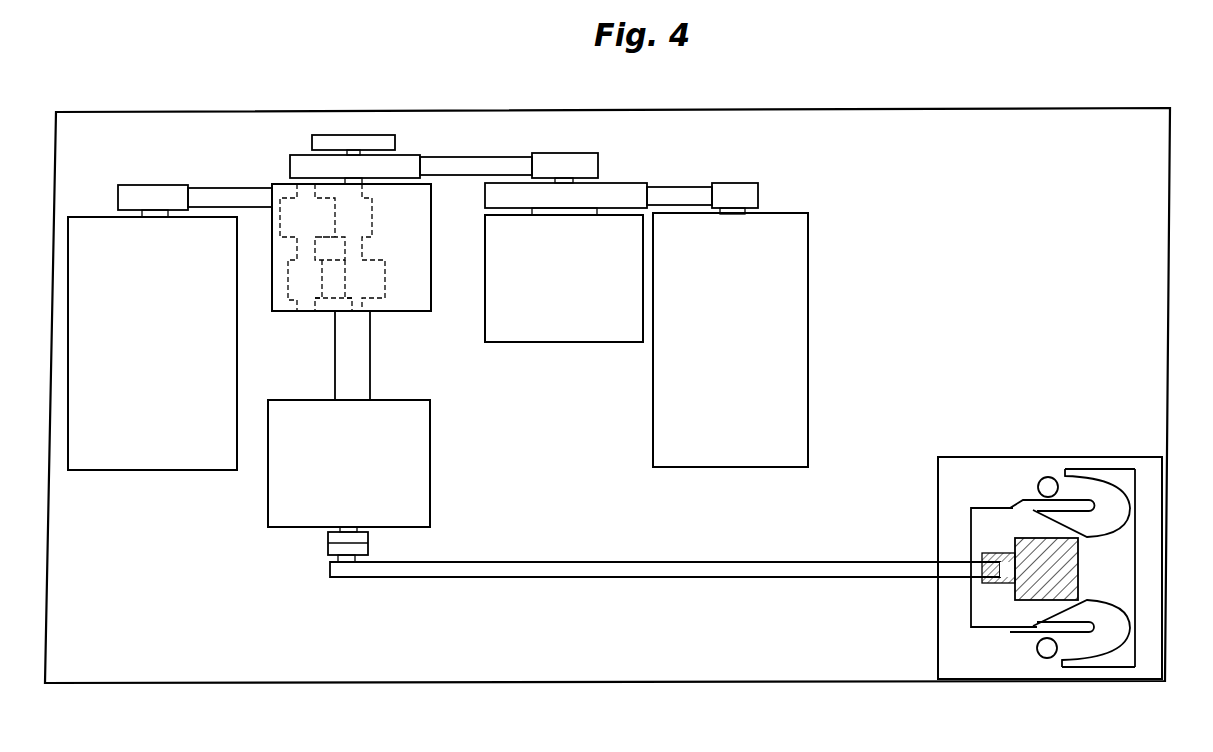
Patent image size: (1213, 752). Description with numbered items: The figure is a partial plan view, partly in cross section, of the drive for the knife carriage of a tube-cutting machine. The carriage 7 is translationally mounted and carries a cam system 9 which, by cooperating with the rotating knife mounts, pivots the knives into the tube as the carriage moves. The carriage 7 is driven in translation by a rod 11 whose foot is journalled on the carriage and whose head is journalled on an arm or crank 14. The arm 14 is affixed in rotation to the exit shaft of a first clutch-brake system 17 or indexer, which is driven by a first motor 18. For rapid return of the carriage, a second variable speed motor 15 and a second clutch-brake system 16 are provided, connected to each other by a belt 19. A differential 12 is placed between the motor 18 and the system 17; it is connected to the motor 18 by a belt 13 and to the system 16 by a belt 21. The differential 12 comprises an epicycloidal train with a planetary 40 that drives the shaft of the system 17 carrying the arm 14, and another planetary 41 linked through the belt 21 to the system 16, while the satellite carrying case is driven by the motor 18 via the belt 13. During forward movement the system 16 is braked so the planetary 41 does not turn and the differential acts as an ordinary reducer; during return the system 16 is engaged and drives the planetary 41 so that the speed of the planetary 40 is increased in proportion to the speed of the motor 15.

The carriage 7 is at (1083, 567).
The cam system 9 is at (1070, 503).
The rod 11 is at (660, 577).
The differential 12 is at (284, 184).
The belt 13 is at (221, 187).
The arm or crank 14 is at (335, 536).
The second variable speed motor 15 is at (753, 468).
The second clutch-brake system 16 is at (585, 343).
The first clutch-brake system 17 is at (430, 489).
The first motor 18 is at (155, 470).
The belt 19 is at (684, 189).
The belt 21 is at (468, 160).
The planetary 40 is at (393, 270).
The planetary 41 is at (368, 215).